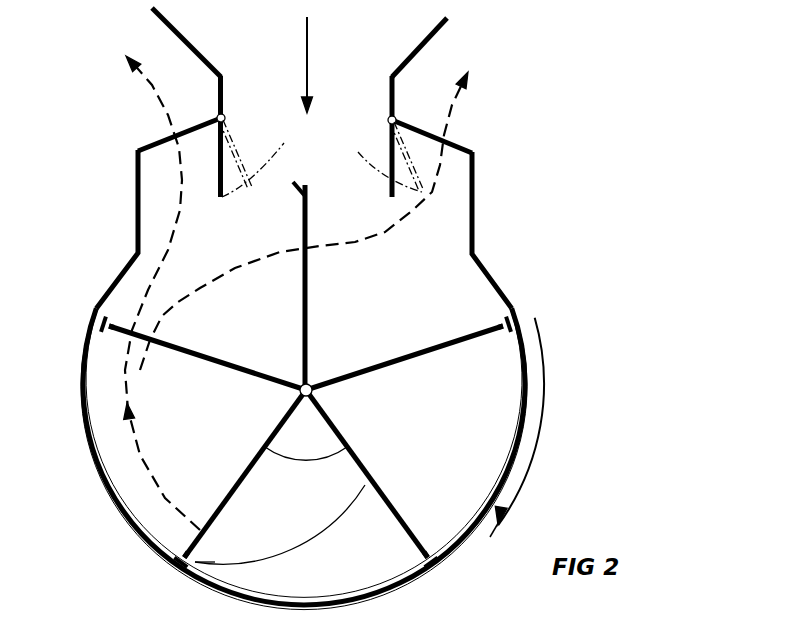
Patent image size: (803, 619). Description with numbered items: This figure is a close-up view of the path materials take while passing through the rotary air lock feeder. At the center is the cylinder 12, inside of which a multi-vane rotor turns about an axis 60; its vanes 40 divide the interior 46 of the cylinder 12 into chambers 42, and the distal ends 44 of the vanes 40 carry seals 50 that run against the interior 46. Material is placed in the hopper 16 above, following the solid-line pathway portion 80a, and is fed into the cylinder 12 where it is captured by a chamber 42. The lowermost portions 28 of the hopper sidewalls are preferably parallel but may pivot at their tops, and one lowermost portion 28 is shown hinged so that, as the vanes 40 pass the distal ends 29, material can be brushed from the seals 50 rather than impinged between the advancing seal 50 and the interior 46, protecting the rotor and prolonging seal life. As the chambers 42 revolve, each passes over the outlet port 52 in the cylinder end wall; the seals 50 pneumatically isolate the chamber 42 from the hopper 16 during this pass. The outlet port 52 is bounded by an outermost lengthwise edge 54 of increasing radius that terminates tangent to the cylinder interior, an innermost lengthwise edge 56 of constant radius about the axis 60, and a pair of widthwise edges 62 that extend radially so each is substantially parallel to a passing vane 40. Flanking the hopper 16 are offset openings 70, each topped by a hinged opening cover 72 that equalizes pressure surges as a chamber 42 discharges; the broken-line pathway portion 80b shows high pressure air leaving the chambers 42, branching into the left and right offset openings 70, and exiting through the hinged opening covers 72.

The cylinder 12 is at (140, 543).
The hopper 16 is at (446, 24).
The lowermost portion of the hopper sidewall 28 is at (321, 158).
The distal lower end of the lowermost portion 29 is at (222, 199).
The vane 40 is at (300, 318).
The chamber 42 is at (271, 348).
The distal end of the vane 44 is at (107, 310).
The interior of the cylinder 46 is at (513, 437).
The seal 50 is at (100, 333).
The outlet port 52 is at (311, 515).
The outermost lengthwise edge 54 is at (196, 562).
The innermost lengthwise edge 56 is at (293, 461).
The axis 60 is at (312, 393).
The widthwise edge 62 is at (246, 480).
The offset opening 70 is at (157, 180).
The hinged opening cover 72 is at (210, 114).
The pathway portion where material is placed in the hopper 80a is at (305, 40).
The pathway portion of high pressure air 80b is at (157, 100).